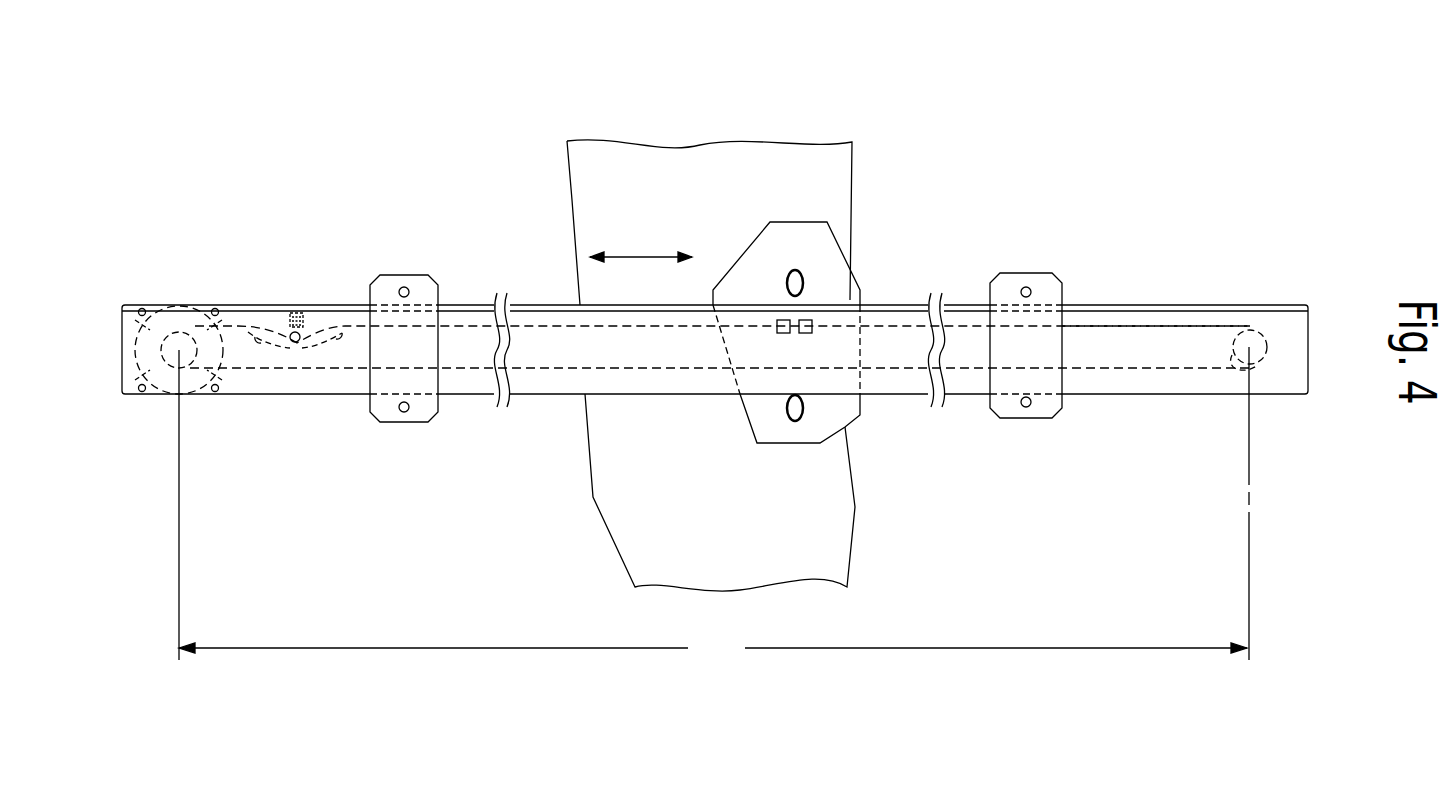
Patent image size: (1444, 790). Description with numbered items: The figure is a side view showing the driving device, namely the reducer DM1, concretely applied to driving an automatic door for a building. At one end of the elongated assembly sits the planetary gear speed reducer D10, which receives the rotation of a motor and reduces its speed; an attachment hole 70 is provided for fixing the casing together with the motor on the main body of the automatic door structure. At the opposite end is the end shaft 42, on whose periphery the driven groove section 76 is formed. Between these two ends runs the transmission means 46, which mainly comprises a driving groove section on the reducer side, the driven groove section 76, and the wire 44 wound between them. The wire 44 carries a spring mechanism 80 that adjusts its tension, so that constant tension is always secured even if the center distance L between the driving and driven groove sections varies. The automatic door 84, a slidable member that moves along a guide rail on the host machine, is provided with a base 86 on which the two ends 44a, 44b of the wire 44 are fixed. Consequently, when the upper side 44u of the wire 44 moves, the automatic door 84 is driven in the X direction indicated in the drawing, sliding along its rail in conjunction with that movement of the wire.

The reducer DM1 is at (953, 222).
The transmission means 46 is at (1077, 283).
The wire 44 is at (1177, 323).
The upper side of the wire 44u is at (1145, 323).
The end of the wire 44a is at (783, 320).
The end of the wire 44b is at (808, 321).
The end shaft 42 is at (1250, 335).
The planetary gear speed reducer D10 is at (173, 307).
The attachment hole 70 is at (215, 390).
The driven groove section 76 is at (1253, 368).
The spring mechanism 80 is at (293, 310).
The automatic door 84 is at (655, 158).
The base 86 is at (823, 420).
The X direction X is at (641, 242).
The center distance L is at (714, 506).